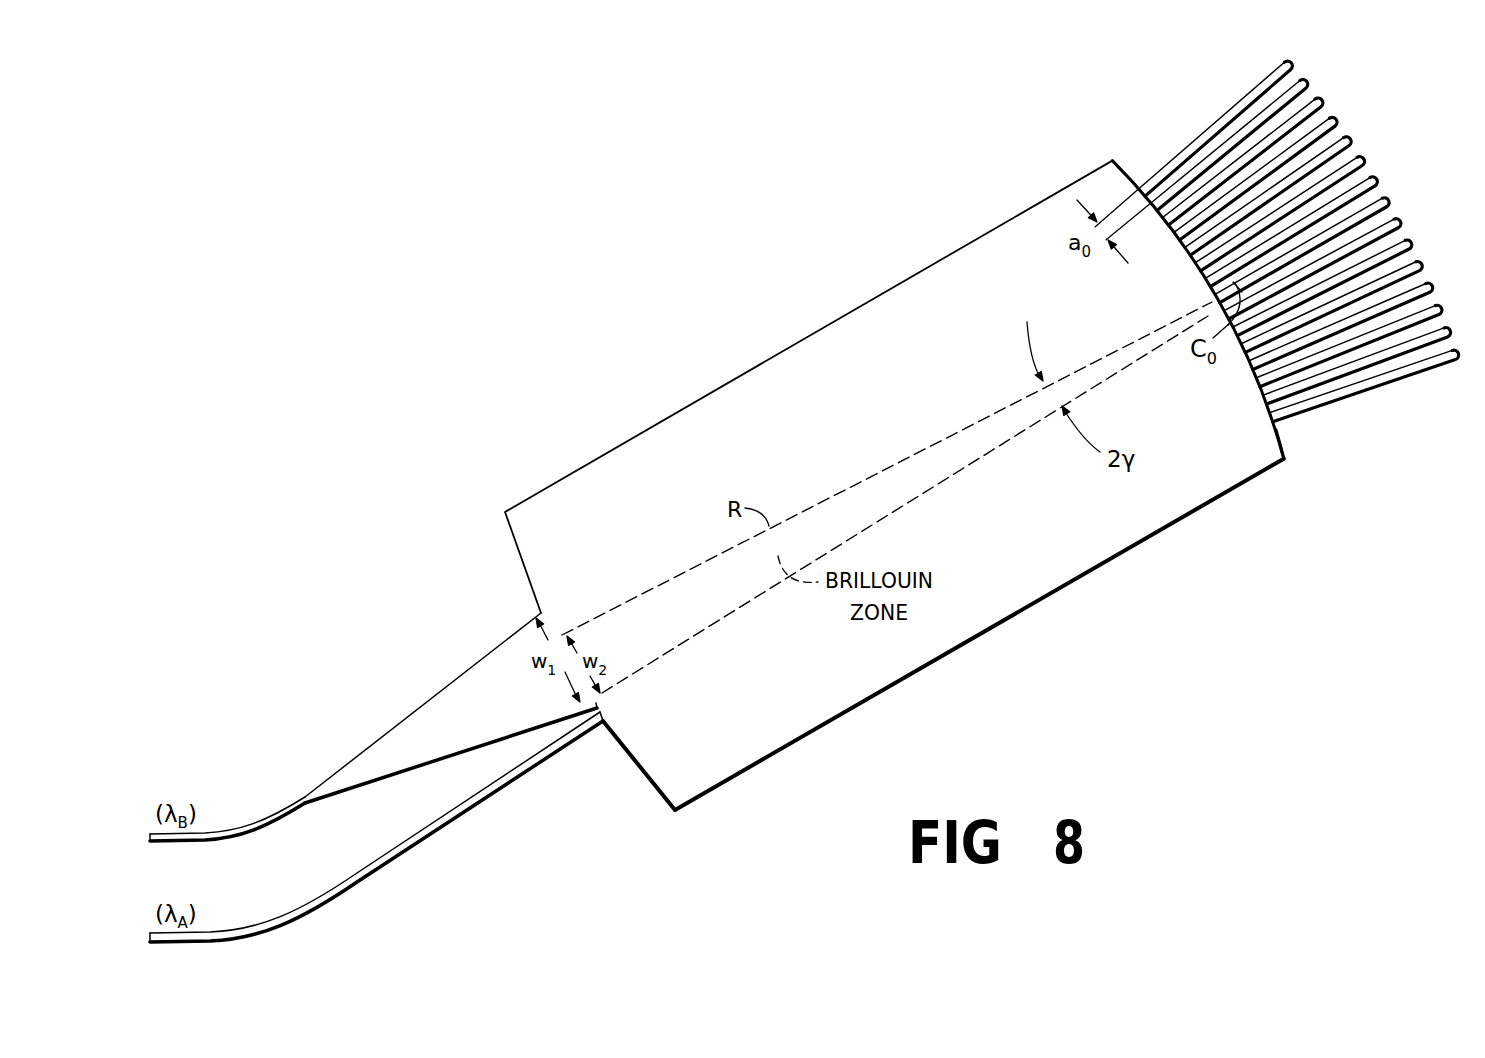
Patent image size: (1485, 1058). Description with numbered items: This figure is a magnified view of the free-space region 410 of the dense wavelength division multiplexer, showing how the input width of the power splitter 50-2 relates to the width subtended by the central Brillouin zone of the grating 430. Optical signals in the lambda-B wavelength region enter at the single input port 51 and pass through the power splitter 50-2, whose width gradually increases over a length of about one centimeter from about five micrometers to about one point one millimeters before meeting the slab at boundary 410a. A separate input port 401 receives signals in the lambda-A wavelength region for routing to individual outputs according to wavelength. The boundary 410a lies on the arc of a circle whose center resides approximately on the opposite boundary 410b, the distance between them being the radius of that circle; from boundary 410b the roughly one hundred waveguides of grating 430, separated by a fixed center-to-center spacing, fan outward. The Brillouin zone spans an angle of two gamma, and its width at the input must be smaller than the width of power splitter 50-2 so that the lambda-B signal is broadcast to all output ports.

The free-space region 410 is at (878, 410).
The boundary 410a is at (663, 802).
The boundary 410b is at (1288, 444).
The grating 430 is at (1322, 44).
The power splitter 50-2 is at (441, 699).
The input port 51 is at (267, 811).
The input port 401 is at (326, 892).